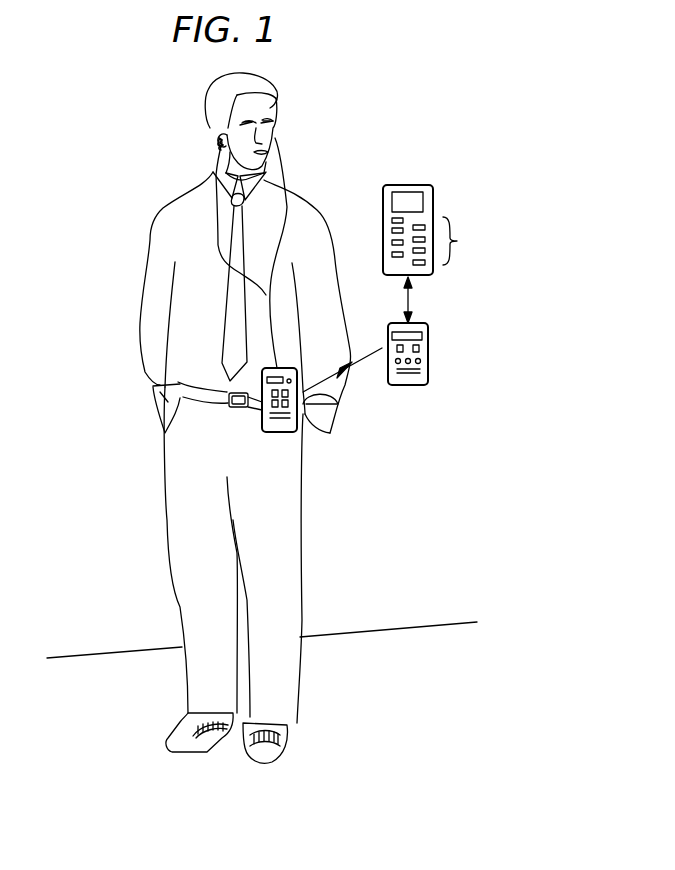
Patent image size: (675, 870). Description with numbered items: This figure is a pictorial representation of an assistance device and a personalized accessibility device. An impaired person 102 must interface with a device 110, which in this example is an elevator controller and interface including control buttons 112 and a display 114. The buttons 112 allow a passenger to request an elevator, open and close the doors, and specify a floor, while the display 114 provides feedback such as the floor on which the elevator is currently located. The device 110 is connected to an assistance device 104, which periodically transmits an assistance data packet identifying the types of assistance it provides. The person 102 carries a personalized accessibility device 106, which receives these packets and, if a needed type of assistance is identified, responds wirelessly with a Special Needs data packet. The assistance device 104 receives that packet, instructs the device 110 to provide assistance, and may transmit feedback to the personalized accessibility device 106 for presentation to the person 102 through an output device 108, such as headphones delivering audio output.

The impaired person 102 is at (148, 255).
The assistance device 104 is at (428, 358).
The personalized accessibility device 106 is at (277, 432).
The output device 108 is at (285, 175).
The device 110 is at (449, 200).
The control buttons 112 is at (453, 241).
The display 114 is at (415, 202).